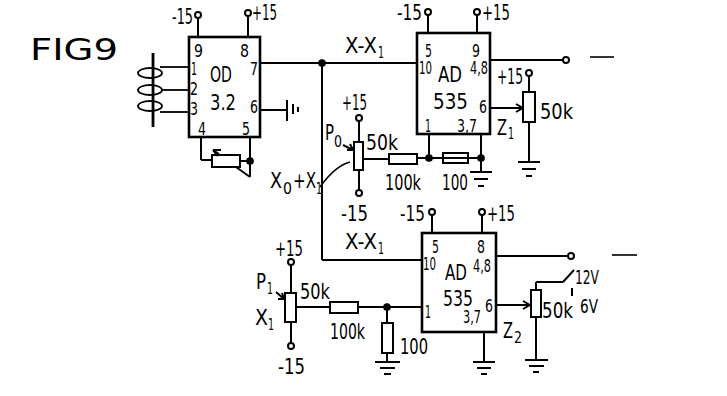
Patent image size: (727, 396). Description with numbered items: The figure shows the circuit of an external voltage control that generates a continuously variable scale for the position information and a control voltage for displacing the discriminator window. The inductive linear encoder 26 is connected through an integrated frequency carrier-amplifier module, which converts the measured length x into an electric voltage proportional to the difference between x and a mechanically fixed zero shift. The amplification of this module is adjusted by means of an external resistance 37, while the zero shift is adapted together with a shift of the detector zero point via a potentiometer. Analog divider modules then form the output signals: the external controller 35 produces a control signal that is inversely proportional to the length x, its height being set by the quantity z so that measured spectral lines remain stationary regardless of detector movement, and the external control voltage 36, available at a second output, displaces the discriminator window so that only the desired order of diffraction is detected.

The inductive linear encoder 26 is at (163, 76).
The external controller 35 is at (555, 56).
The external control voltage 36 is at (566, 257).
The external resistance 37 is at (210, 170).